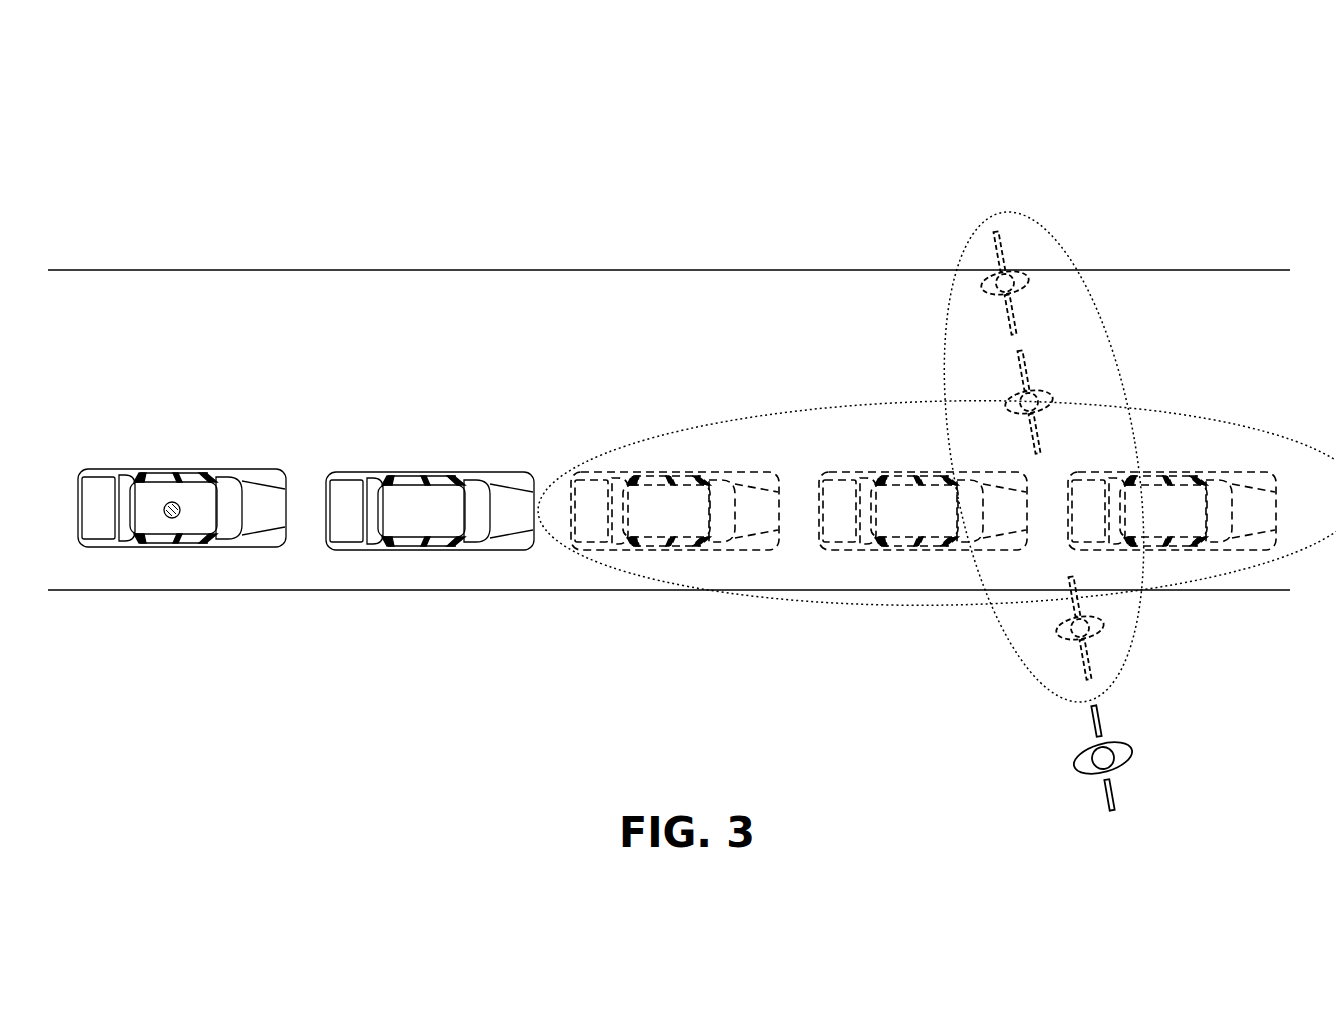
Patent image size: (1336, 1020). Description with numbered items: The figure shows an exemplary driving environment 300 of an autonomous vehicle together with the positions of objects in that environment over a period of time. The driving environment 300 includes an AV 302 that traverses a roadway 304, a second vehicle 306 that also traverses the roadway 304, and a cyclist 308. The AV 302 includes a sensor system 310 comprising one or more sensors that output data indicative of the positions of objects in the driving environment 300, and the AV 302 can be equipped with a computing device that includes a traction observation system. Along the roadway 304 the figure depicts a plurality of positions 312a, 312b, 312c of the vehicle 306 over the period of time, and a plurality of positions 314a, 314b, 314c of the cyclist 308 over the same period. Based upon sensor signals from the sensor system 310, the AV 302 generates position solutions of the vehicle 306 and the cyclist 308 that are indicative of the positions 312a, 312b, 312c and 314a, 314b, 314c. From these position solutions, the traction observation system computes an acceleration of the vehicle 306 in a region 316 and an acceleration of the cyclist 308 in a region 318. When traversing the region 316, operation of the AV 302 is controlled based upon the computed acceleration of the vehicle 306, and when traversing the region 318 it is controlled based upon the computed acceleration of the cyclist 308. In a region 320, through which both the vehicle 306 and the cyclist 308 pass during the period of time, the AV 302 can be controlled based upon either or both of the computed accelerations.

The driving environment 300 is at (324, 110).
The AV 302 is at (178, 472).
The roadway 304 is at (707, 270).
The second vehicle 306 is at (437, 472).
The cyclist 308 is at (1132, 747).
The sensor system 310 is at (170, 518).
The position of the vehicle 312a is at (737, 472).
The position of the vehicle 312b is at (948, 472).
The position of the vehicle 312c is at (1172, 472).
The position of the cyclist 314a is at (1107, 627).
The position of the cyclist 314b is at (1022, 352).
The position of the cyclist 314c is at (1005, 228).
The region 316 is at (830, 406).
The region 318 is at (1120, 356).
The region 320 is at (1025, 577).